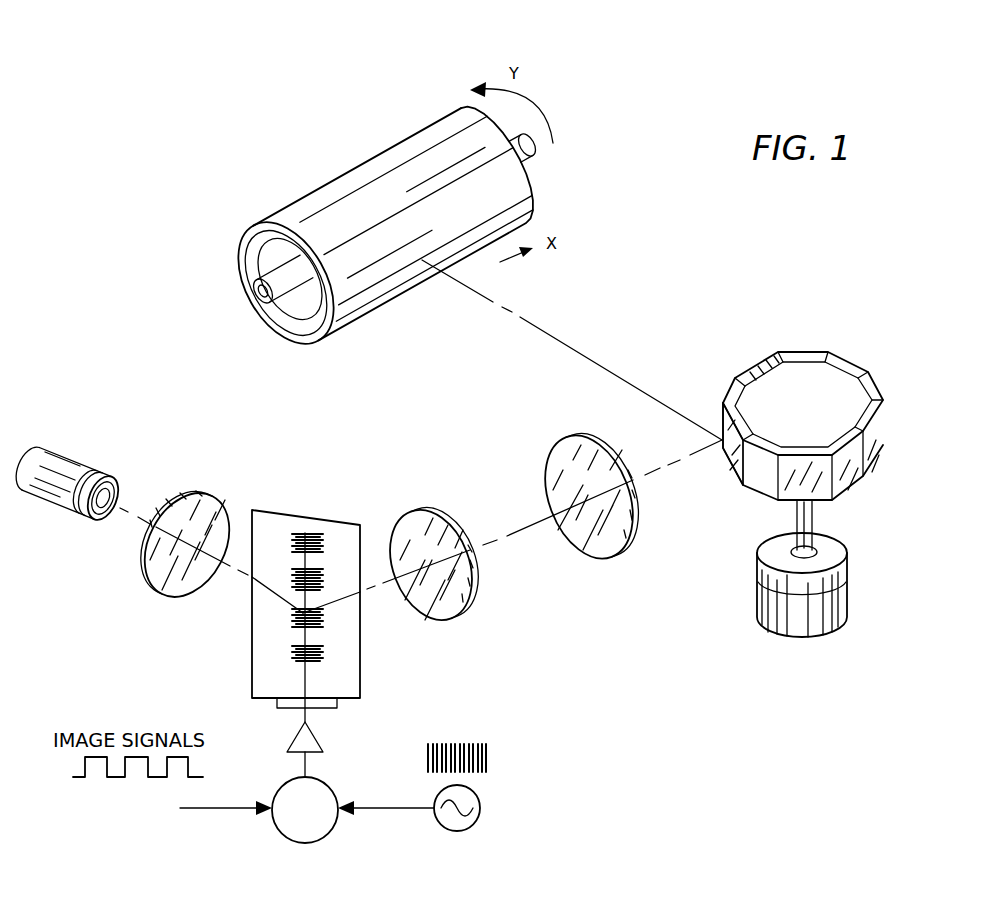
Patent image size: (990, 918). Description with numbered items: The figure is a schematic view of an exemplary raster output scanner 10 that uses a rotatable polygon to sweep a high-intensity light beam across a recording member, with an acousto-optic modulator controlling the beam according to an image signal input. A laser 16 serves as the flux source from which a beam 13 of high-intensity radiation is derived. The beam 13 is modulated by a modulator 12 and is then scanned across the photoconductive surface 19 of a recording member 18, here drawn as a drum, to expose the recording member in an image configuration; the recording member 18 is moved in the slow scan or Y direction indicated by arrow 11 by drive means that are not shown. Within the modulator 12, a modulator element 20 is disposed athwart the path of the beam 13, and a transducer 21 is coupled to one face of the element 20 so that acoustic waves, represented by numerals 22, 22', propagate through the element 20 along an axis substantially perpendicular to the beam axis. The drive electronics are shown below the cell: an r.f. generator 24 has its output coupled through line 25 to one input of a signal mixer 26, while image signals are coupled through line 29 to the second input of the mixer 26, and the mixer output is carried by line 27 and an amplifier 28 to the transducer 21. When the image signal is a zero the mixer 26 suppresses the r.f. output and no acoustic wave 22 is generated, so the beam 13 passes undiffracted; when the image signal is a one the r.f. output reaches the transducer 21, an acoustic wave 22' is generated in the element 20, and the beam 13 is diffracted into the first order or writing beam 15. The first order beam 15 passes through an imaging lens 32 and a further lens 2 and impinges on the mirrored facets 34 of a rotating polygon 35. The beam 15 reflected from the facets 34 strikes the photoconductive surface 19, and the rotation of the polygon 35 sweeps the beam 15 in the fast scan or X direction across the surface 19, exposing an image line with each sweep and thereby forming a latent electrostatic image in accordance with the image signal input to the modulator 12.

The lens 2 is at (593, 405).
The raster scanner 10 is at (337, 456).
The arrow 11 is at (553, 123).
The modulator 12 is at (302, 500).
The beam 13 is at (157, 527).
The first order beam 15 is at (385, 588).
The laser 16 is at (90, 458).
The recording member 18 is at (369, 233).
The photoconductive surface 19 is at (372, 176).
The modulator element 20 is at (303, 586).
The transducer 21 is at (279, 707).
The acoustic wave 22 is at (261, 631).
The acoustic wave 22' is at (350, 659).
The r.f. generator 24 is at (474, 829).
The line 25 is at (414, 809).
The signal mixer 26 is at (281, 834).
The line 27 is at (308, 766).
The amplifier 28 is at (323, 748).
The line 29 is at (203, 809).
The imaging lens 32 is at (200, 492).
The mirrored facets 34 is at (723, 438).
The rotating polygon 35 is at (826, 493).